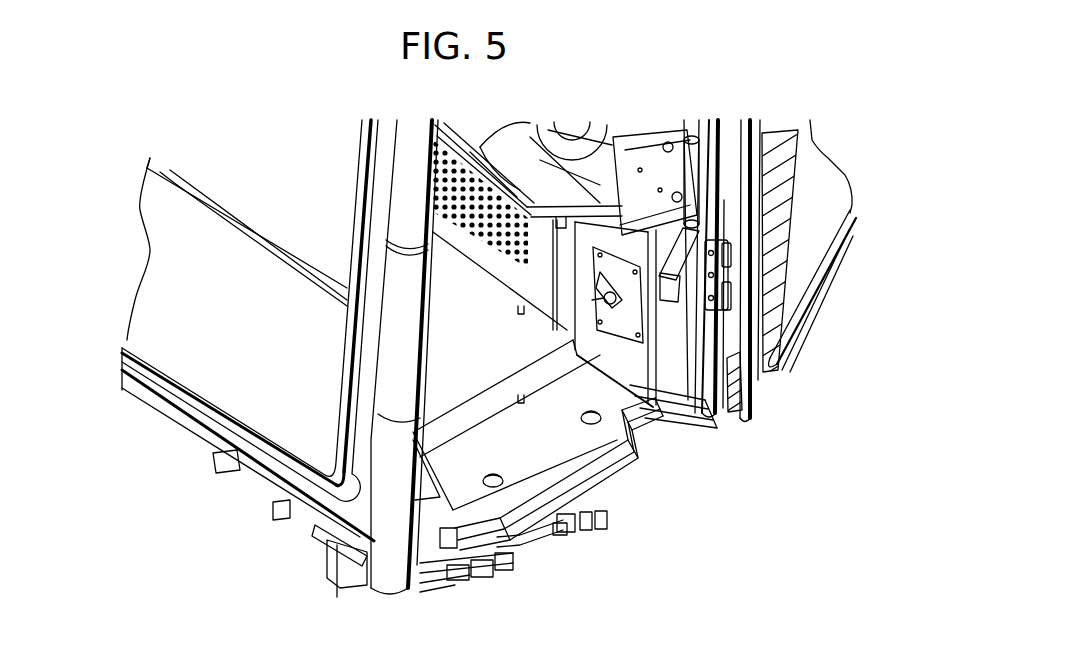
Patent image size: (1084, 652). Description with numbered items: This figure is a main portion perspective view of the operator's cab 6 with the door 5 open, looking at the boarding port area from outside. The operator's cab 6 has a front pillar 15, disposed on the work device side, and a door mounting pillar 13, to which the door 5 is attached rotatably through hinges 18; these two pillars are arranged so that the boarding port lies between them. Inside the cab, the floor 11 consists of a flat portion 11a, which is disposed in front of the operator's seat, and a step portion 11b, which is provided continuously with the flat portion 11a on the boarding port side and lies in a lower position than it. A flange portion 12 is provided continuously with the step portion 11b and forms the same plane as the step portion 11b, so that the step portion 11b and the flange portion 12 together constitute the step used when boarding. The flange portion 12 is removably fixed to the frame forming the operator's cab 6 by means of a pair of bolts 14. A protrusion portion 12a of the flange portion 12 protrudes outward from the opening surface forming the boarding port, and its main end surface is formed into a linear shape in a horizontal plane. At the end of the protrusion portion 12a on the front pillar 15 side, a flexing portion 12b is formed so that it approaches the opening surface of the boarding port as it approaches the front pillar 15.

The door 5 is at (813, 175).
The operator's cab 6 is at (175, 421).
The floor 11 is at (481, 352).
The flat portion 11a is at (452, 275).
The step portion 11b is at (677, 405).
The flange portion 12 is at (588, 390).
The protrusion portion 12a is at (587, 450).
The flexing portion 12b is at (482, 530).
The door mounting pillar 13 is at (697, 343).
The bolts 14 is at (601, 420).
The front pillar 15 is at (398, 290).
The hinges 18 is at (713, 280).